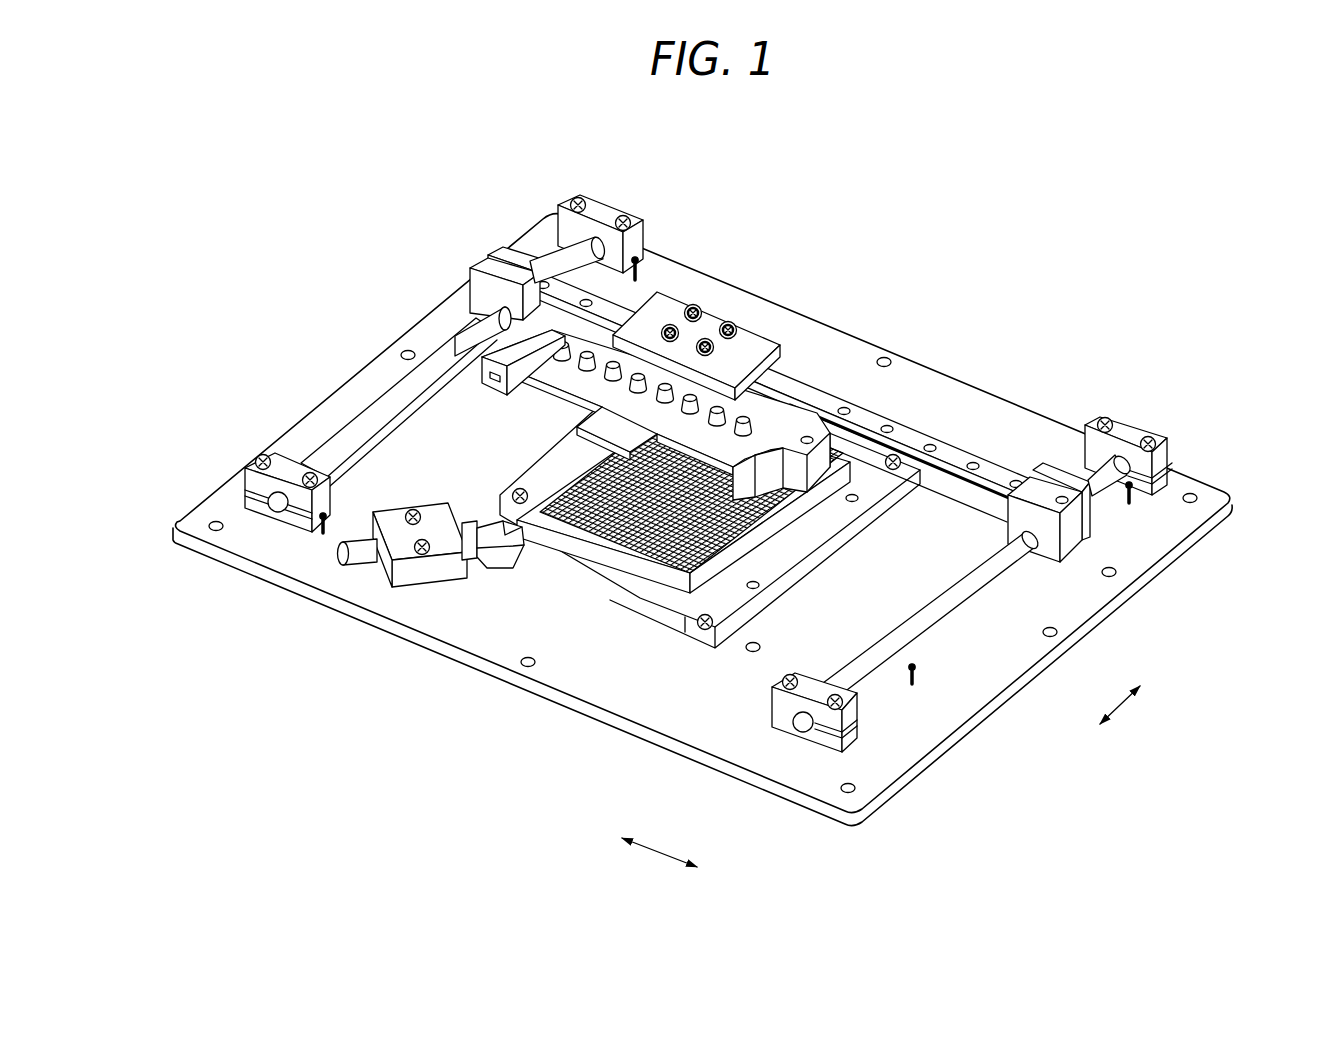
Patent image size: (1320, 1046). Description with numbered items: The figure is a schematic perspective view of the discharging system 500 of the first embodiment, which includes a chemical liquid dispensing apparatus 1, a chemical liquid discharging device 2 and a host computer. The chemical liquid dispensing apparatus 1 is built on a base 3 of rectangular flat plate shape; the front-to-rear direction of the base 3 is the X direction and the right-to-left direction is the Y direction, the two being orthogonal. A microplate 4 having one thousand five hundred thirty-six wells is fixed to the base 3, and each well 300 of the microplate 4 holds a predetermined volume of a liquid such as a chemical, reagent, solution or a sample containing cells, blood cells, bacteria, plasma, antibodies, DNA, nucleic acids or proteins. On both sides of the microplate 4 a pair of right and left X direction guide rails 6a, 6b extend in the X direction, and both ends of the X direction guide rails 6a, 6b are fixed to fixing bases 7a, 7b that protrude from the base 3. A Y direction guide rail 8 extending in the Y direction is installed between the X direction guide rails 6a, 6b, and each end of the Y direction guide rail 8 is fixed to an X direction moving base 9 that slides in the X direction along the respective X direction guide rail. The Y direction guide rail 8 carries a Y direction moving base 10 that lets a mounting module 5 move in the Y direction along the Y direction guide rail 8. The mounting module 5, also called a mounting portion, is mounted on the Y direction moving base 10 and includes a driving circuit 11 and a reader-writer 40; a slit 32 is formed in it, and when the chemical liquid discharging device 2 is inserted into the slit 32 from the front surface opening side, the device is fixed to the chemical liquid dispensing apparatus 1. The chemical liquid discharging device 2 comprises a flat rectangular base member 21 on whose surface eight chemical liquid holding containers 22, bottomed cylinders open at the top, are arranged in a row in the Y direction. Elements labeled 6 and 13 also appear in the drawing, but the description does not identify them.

The chemical liquid dispensing apparatus 1 is at (1042, 312).
The discharging system 500 is at (727, 172).
The chemical liquid discharging device 2 is at (534, 406).
The base 3 is at (930, 732).
The microplate 4 is at (650, 620).
The mounting module 5 is at (806, 415).
The actuator 6 is at (431, 545).
The X direction guide rail 6a is at (358, 438).
The X direction guide rail 6b is at (947, 605).
The fixing base 7a is at (606, 212).
The fixing base 7b is at (283, 470).
The Y direction guide rail 8 is at (787, 390).
The X direction moving base 9 is at (489, 262).
The Y direction moving base 10 is at (753, 347).
The driving circuit 11 is at (777, 400).
The rail front face 13 is at (767, 402).
The base member 21 is at (655, 395).
The chemical liquid holding container 22 is at (630, 422).
The slit 32 is at (500, 375).
The reader-writer 40 is at (720, 388).
The well 300 is at (631, 553).